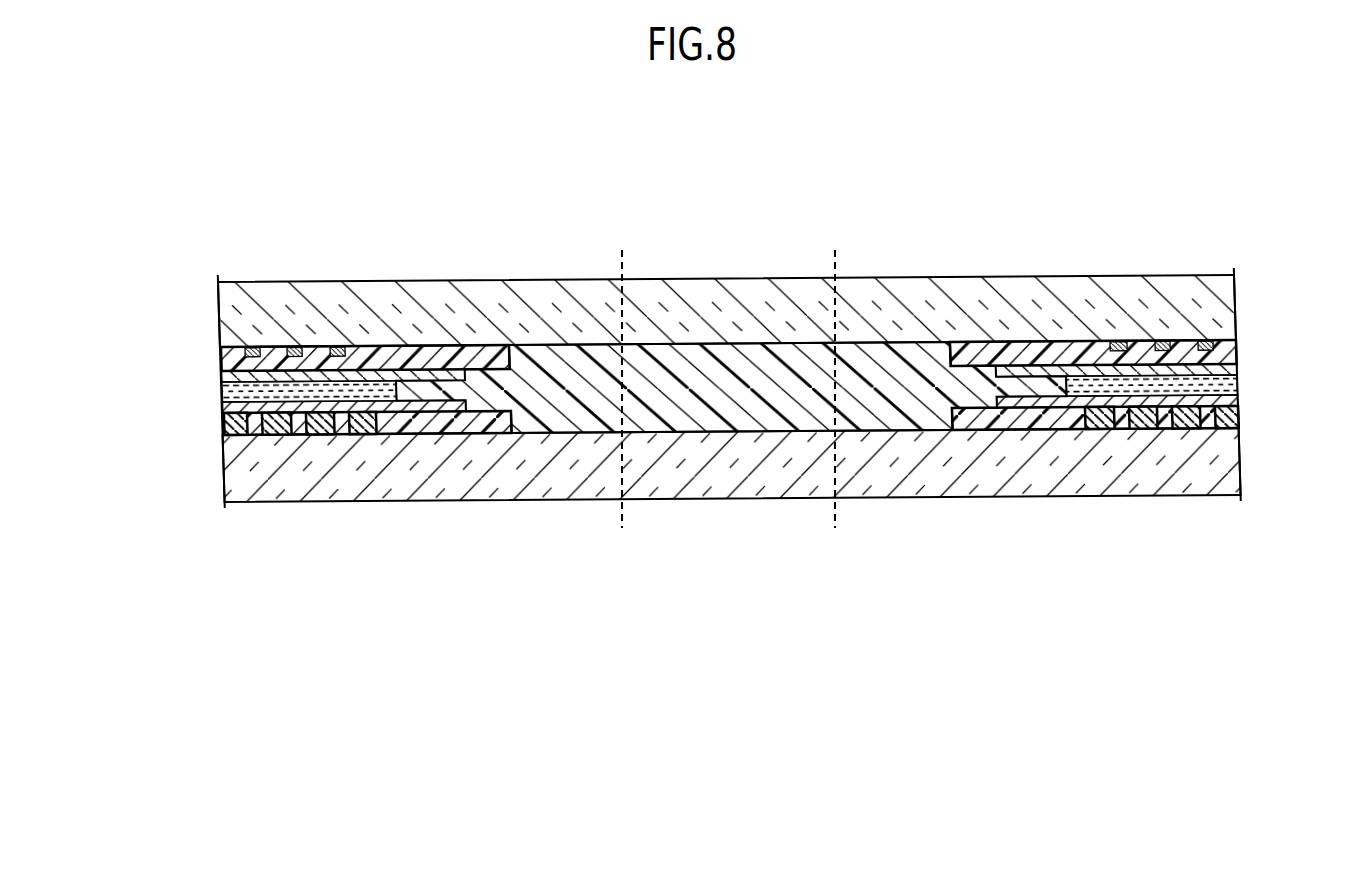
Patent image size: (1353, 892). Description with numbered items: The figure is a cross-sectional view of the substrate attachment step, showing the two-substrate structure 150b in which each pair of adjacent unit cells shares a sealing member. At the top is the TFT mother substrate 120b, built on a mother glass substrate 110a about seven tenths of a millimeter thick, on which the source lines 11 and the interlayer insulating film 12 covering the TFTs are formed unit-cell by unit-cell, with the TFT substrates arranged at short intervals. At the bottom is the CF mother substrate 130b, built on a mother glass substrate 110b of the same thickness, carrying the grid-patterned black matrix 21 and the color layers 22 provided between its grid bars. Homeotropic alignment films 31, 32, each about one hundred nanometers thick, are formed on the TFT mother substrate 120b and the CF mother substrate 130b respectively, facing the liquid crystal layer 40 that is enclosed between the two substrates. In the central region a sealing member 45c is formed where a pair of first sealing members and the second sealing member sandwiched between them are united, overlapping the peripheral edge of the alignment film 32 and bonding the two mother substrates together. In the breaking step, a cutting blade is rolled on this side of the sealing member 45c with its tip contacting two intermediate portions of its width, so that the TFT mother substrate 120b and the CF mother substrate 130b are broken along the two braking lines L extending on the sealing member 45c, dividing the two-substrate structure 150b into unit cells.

The mother glass substrate 110a is at (1235, 307).
The mother glass substrate 110b is at (1234, 459).
The TFT mother substrate 120b is at (209, 283).
The CF mother substrate 130b is at (205, 413).
The two-substrate structure 150b is at (119, 305).
The source lines 11 is at (246, 346).
The interlayer insulating film 12 is at (418, 346).
The black matrix 21 is at (398, 438).
The color layers 22 is at (268, 437).
The homeotropic alignment film 31 is at (449, 376).
The homeotropic alignment film 32 is at (451, 412).
The liquid crystal layer 40 is at (215, 395).
The sealing member 45c is at (717, 378).
The braking lines L is at (834, 262).